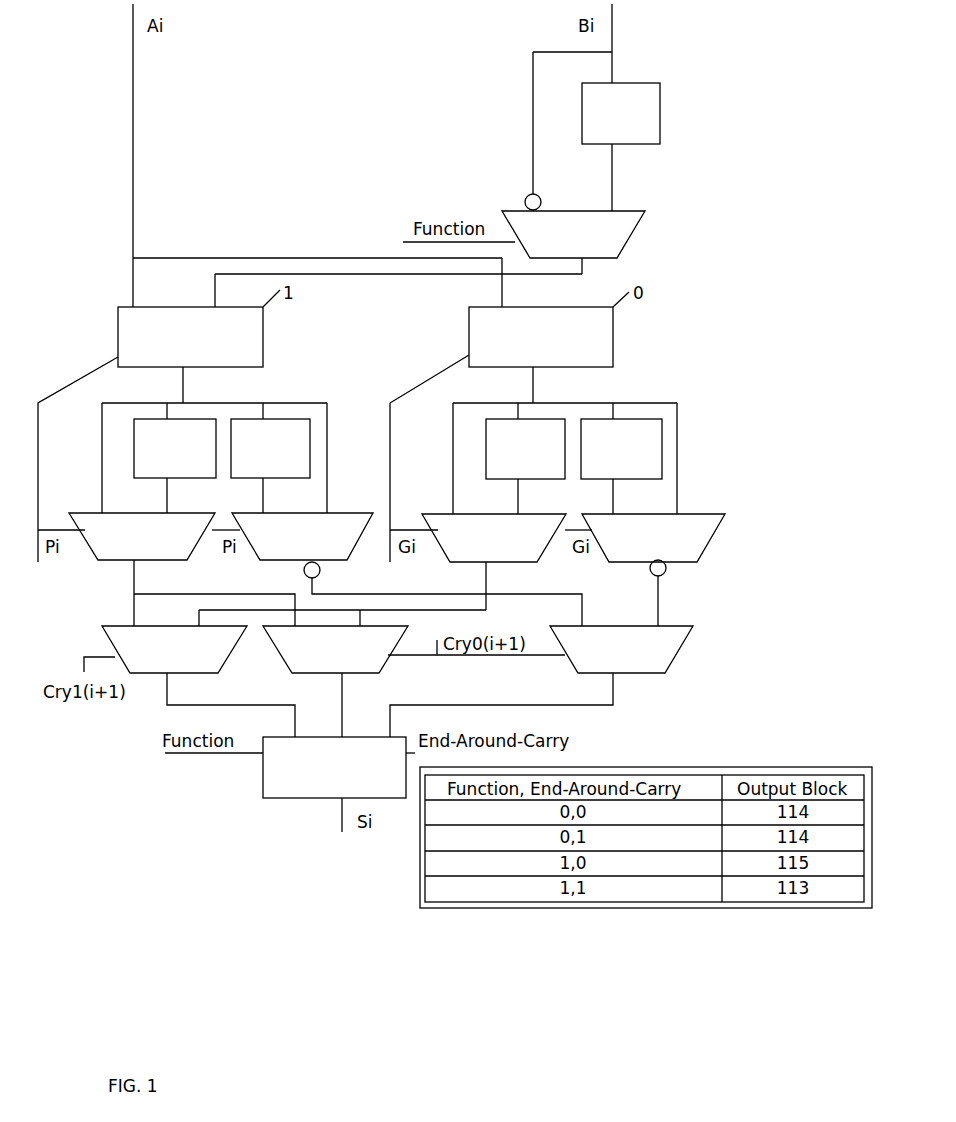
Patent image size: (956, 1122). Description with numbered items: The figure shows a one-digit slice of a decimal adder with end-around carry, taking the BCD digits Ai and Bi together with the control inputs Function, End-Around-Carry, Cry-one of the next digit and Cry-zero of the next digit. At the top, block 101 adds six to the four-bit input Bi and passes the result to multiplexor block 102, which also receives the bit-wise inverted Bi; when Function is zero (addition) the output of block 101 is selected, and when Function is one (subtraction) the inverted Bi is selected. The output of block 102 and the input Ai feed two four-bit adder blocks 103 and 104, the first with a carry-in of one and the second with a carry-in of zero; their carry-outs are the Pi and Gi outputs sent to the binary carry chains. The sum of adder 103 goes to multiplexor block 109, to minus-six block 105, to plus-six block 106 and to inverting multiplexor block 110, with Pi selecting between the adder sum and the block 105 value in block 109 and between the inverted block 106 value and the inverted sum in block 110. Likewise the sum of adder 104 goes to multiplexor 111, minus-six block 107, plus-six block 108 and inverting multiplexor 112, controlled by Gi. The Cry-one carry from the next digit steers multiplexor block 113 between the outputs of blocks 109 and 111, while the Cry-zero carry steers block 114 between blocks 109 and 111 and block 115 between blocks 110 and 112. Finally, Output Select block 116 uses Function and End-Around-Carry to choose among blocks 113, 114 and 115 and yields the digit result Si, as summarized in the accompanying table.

The plus-six block 101 is at (621, 113).
The multiplexor block 102 is at (573, 234).
The 4-bit adder block 103 is at (190, 337).
The 4-bit adder block 104 is at (541, 337).
The minus-six block 105 is at (175, 449).
The plus-six block 106 is at (270, 449).
The minus-six block 107 is at (525, 449).
The plus-six block 108 is at (621, 449).
The multiplexor block 109 is at (142, 537).
The inverting multiplexor block 110 is at (302, 537).
The multiplexor block 111 is at (494, 538).
The inverting multiplexor block 112 is at (653, 538).
The multiplexor block 113 is at (174, 649).
The multiplexor block 114 is at (335, 649).
The multiplexor block 115 is at (621, 649).
The output select block 116 is at (334, 767).